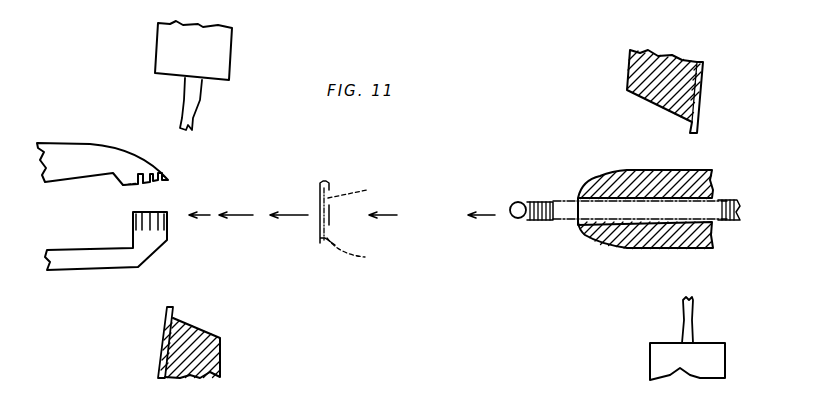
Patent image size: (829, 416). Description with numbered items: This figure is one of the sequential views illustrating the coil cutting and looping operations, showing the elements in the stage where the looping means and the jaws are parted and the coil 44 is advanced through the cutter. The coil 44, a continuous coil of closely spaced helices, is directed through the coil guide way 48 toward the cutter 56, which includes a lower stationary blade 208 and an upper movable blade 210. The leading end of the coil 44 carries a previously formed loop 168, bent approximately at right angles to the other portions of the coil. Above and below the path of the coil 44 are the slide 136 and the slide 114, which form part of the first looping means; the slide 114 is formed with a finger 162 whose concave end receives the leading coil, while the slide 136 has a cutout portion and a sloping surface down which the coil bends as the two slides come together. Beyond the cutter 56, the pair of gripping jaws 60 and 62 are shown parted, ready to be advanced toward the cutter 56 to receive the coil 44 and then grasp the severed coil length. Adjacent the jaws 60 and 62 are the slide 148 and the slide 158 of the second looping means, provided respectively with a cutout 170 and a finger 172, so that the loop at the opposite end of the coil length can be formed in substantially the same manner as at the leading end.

The coil 44 is at (567, 207).
The coil guide way 48 is at (623, 240).
The cutter 56 is at (345, 186).
The gripping jaw 60 is at (63, 148).
The gripping jaw 62 is at (72, 265).
The slide 114 is at (657, 363).
The slide 136 is at (640, 73).
The slide 148 is at (210, 360).
The slide 158 is at (212, 41).
The finger 162 is at (683, 322).
The loop 168 is at (513, 202).
The cutout 170 is at (168, 322).
The finger 172 is at (197, 108).
The lower stationary blade 208 is at (362, 252).
The upper movable blade 210 is at (364, 189).